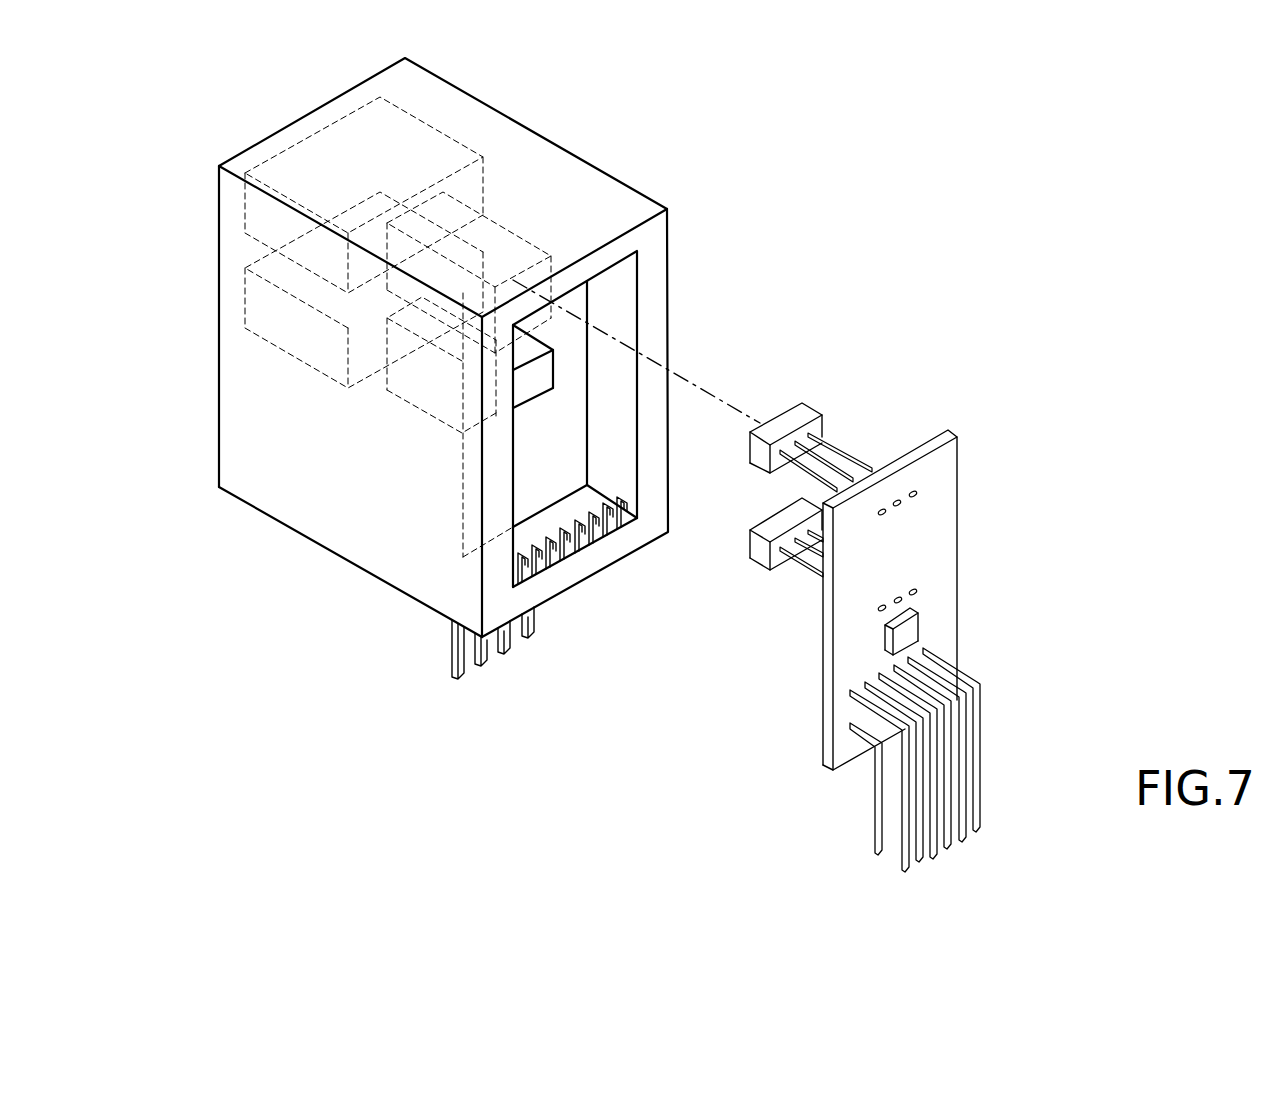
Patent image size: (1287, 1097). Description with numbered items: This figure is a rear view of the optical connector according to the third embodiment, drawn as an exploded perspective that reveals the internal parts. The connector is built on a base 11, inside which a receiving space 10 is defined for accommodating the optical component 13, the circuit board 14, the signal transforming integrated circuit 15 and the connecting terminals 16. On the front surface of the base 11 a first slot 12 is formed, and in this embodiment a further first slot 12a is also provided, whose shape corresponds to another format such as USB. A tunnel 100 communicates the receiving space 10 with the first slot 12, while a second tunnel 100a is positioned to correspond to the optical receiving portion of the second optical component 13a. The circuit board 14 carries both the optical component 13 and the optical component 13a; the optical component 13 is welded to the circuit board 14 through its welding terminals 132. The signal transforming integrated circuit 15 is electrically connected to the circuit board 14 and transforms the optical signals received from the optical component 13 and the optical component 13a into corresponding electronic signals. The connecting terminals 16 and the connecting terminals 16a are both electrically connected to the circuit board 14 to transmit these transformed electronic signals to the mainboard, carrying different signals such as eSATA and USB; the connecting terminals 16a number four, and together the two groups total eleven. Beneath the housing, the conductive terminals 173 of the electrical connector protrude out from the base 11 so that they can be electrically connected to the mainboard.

The receiving space 10 is at (610, 302).
The base 11 is at (580, 177).
The first slot 12 is at (320, 158).
The first slot 12a is at (257, 303).
The tunnel 100 is at (495, 243).
The second tunnel 100a is at (430, 367).
The optical component 13 is at (790, 420).
The welding terminals 132 is at (852, 453).
The optical component 13a is at (755, 550).
The circuit board 14 is at (930, 528).
The signal transforming integrated circuit 15 is at (915, 632).
The connecting terminals 16 is at (963, 753).
The connecting terminals 16a is at (877, 818).
The conductive terminals 173 is at (453, 655).